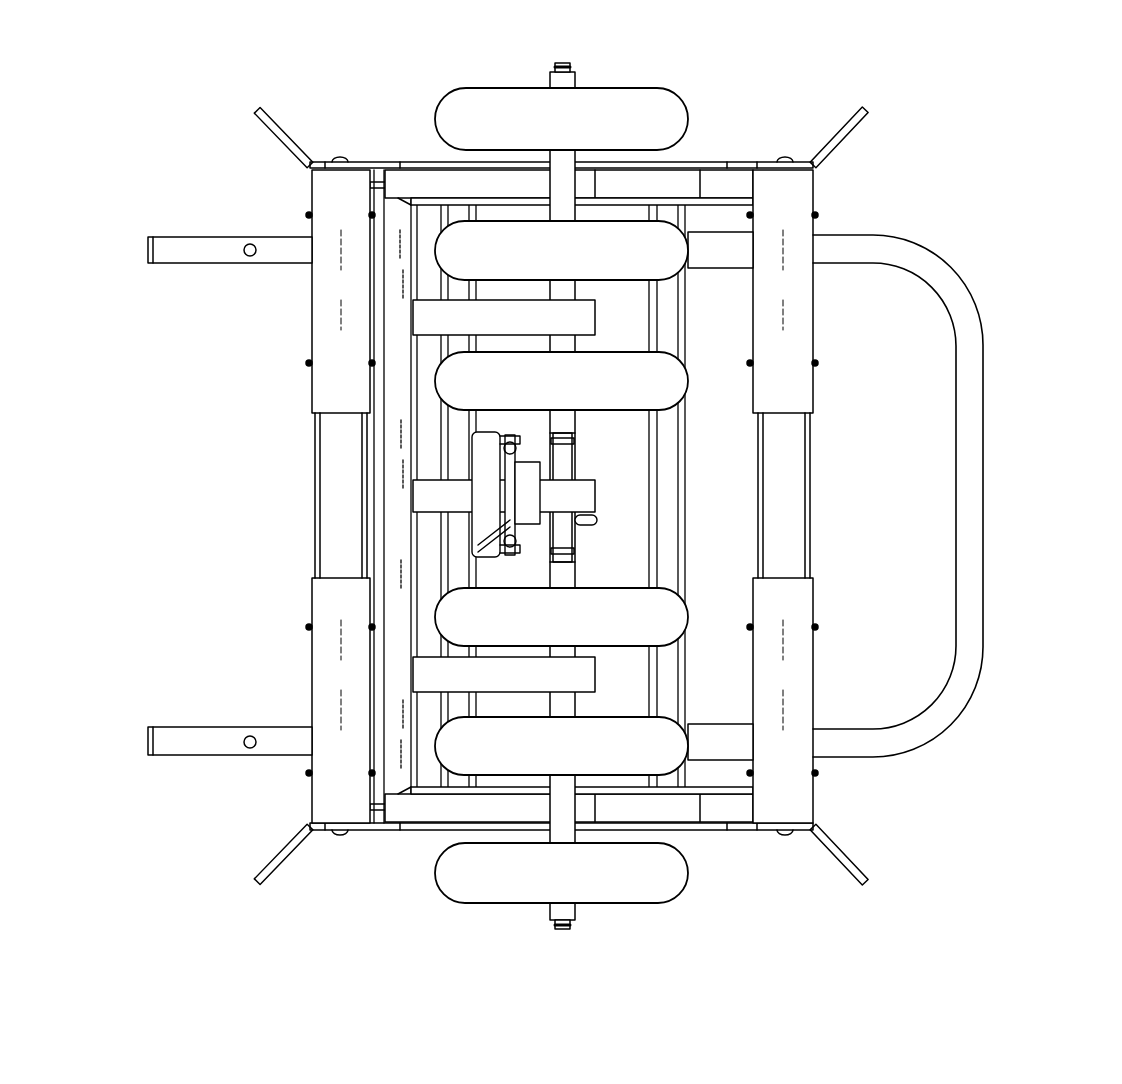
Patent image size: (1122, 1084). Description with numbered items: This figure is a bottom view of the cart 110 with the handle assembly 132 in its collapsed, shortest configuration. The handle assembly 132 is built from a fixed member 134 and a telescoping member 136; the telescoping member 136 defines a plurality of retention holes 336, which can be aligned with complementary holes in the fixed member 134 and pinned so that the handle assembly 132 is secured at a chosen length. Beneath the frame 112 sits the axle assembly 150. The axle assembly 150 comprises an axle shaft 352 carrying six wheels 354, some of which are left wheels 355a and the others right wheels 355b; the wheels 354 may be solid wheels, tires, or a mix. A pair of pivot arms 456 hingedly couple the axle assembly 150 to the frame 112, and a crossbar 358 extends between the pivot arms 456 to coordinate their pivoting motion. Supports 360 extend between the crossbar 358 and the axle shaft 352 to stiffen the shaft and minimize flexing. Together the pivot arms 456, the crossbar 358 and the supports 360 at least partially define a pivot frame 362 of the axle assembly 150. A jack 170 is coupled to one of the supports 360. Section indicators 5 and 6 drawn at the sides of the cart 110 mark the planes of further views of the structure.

The cart 110 is at (172, 92).
The frame 112 is at (795, 535).
The handle assembly 132 is at (980, 425).
The telescoping member 136 is at (935, 496).
The fixed member 134 is at (720, 240).
The axle assembly 150 is at (555, 65).
The jack 170 is at (480, 537).
The retention holes 336 is at (253, 245).
The axle shaft 352 is at (565, 458).
The wheel 354 is at (634, 517).
The left wheels 355a is at (668, 378).
The right wheels 355b is at (650, 620).
The crossbar 358 is at (385, 440).
The pivot frame 362 is at (299, 500).
The support 360 is at (450, 318).
The pivot arm 456 is at (445, 182).
The section line 5- 5 is at (1101, 488).
The section line 6- 6 is at (1101, 748).